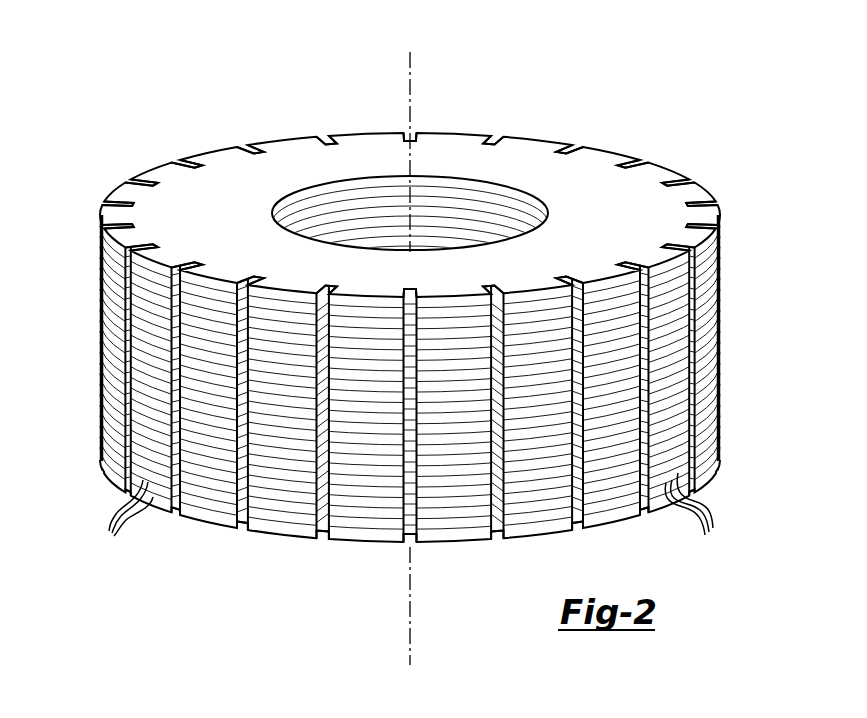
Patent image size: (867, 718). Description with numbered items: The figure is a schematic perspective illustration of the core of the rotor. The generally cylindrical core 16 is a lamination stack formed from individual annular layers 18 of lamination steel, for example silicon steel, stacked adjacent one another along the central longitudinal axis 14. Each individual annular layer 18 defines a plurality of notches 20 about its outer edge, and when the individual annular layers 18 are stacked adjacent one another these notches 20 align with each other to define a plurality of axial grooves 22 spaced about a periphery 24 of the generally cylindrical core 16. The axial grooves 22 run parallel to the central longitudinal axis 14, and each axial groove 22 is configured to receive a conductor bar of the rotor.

The central longitudinal axis 14 is at (413, 78).
The generally cylindrical core 16 is at (426, 351).
The individual annular layers 18 is at (409, 517).
The notches 20 is at (177, 156).
The axial grooves 22 is at (175, 516).
The periphery 24 is at (115, 190).